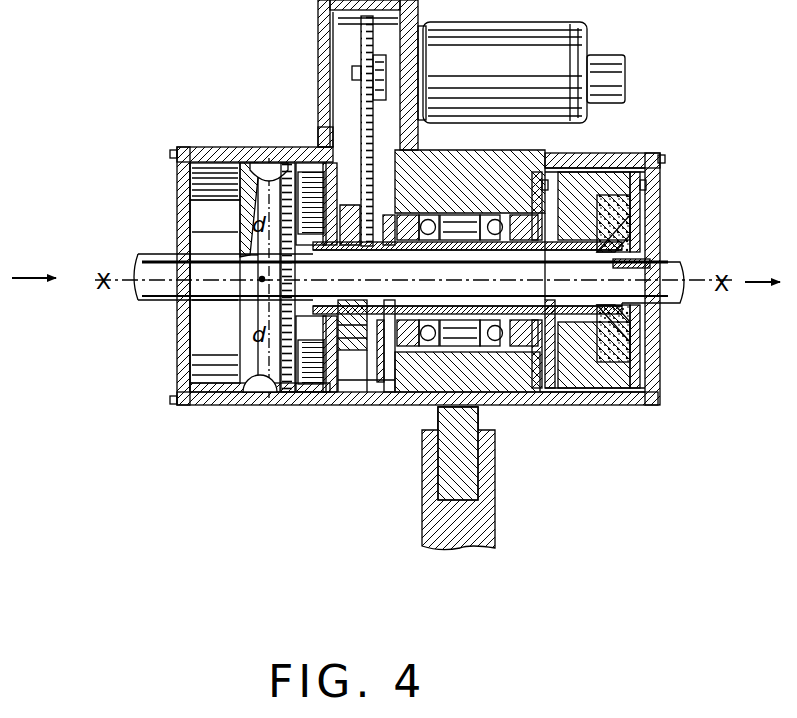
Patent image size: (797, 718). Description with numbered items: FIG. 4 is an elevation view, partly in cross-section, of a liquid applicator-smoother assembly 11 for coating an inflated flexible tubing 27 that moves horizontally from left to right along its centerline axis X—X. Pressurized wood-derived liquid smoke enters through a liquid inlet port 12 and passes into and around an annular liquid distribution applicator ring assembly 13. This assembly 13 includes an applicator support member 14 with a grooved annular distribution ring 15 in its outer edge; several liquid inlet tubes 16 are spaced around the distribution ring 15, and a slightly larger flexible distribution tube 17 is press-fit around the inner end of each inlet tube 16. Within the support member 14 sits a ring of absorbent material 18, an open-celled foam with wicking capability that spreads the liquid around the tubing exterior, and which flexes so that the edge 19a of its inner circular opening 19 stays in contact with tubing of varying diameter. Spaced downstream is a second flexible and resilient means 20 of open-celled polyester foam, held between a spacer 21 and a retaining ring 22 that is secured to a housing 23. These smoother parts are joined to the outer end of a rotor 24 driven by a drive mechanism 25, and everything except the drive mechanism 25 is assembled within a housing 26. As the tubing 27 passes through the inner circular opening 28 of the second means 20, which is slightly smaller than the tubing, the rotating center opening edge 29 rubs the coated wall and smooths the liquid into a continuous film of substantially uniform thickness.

The liquid applicator-smoother assembly 11 is at (214, 66).
The liquid inlet port 12 is at (270, 150).
The annular liquid distribution applicator ring assembly 13 is at (228, 333).
The applicator support member 14 is at (298, 400).
The grooved annular distribution ring 15 is at (262, 398).
The liquid inlet tube 16 is at (263, 140).
The flexible distribution tube 17 is at (262, 200).
The absorbent material ring 18 is at (238, 199).
The inner circular opening 19 is at (260, 296).
The edge 19a is at (255, 292).
The second flexible and resilient means 20 is at (606, 355).
The spacer 21 is at (630, 371).
The retaining ring 22 is at (632, 378).
The housing 23 is at (609, 396).
The rotor 24 is at (490, 408).
The drive mechanism 25 is at (512, 23).
The housing 26 is at (573, 408).
The inflated flexible tubing 27 is at (160, 255).
The inner circular opening 28 is at (668, 300).
The rotating center opening edge 29 is at (655, 270).